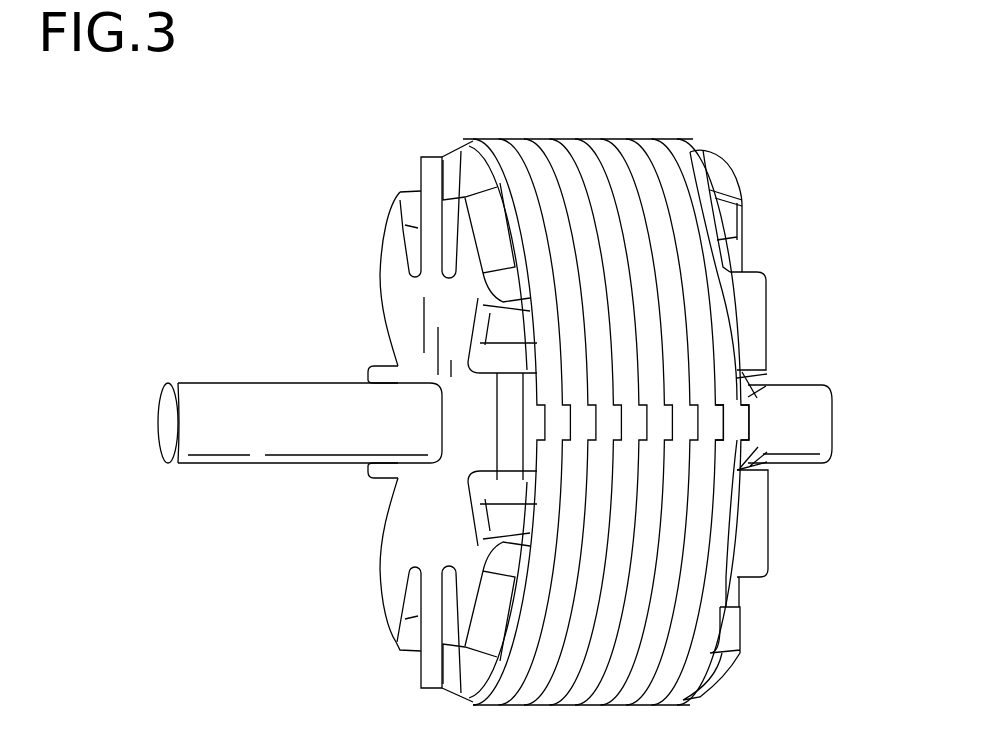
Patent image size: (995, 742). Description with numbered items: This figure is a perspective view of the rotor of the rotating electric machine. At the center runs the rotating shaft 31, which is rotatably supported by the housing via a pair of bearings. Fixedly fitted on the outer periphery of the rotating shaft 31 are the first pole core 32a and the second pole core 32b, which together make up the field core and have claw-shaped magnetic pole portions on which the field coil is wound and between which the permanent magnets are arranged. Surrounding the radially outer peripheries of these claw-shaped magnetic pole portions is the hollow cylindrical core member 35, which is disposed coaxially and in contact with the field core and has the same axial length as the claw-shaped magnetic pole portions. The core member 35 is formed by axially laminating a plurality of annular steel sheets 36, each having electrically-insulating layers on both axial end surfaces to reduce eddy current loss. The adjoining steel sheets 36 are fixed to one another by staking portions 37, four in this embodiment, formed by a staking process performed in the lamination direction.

The rotating shaft 31 is at (228, 396).
The first pole core 32a is at (425, 154).
The second pole core 32b is at (720, 157).
The core member 35 is at (546, 137).
The annular steel sheets 36 is at (653, 158).
The staking portions 37 is at (717, 422).